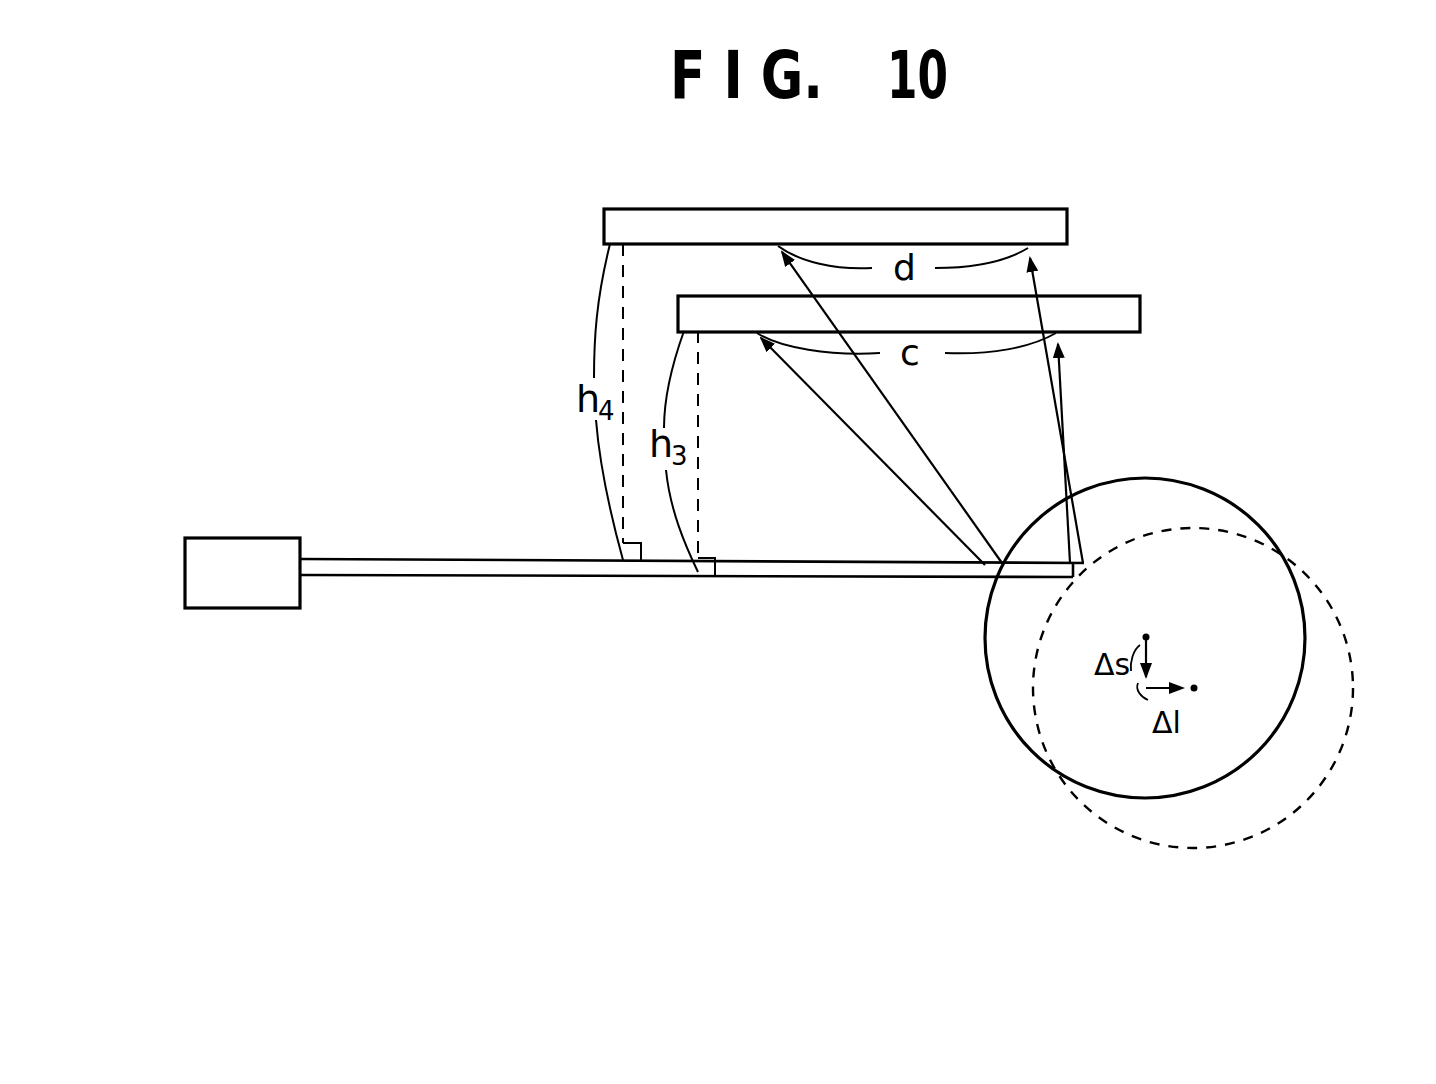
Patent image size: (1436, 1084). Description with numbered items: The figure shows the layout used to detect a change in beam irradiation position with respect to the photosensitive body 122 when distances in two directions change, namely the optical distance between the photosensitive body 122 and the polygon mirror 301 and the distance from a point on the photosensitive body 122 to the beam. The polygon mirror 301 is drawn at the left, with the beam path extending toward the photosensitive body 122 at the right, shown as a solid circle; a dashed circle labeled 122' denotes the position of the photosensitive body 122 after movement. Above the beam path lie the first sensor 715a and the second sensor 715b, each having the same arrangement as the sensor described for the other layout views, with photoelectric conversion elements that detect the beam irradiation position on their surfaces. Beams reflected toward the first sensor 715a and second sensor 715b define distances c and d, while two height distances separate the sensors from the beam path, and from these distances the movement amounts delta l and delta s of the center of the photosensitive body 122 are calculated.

The second sensor 715b is at (1048, 229).
The first sensor 715a is at (1126, 314).
The polygon mirror 301 is at (226, 556).
The photosensitive body 122 is at (1145, 598).
The photosensitive body after movement 122' is at (1215, 668).